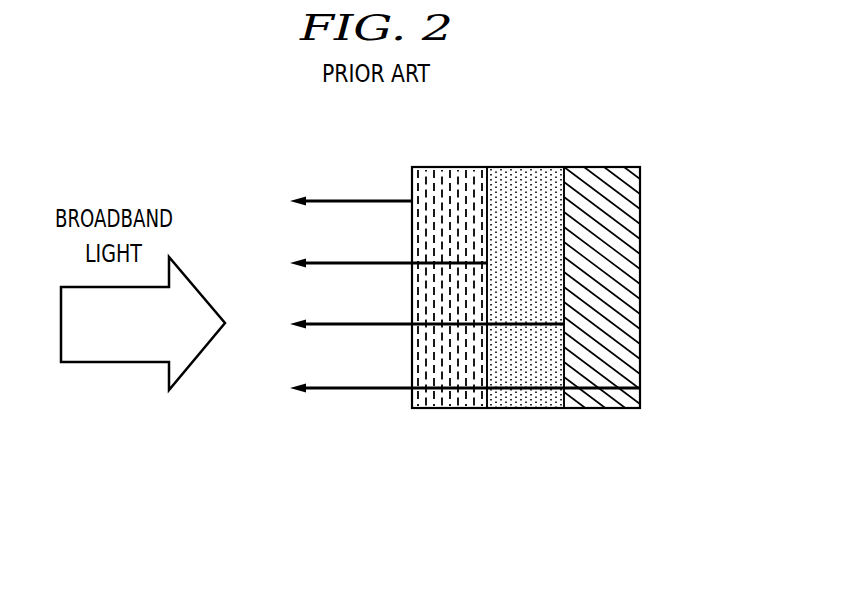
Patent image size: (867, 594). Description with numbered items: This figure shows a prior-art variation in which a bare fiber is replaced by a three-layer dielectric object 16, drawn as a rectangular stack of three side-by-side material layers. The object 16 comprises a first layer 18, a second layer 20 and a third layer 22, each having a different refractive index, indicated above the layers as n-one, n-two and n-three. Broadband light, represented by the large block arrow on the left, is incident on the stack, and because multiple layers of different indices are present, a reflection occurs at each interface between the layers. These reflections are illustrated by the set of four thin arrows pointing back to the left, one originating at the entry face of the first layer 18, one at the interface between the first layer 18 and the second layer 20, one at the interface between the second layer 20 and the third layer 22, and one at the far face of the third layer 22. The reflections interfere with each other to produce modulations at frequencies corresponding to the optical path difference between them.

The three-layer dielectric object 16 is at (662, 140).
The first layer 18 is at (445, 410).
The second layer 20 is at (522, 410).
The third layer 22 is at (600, 410).